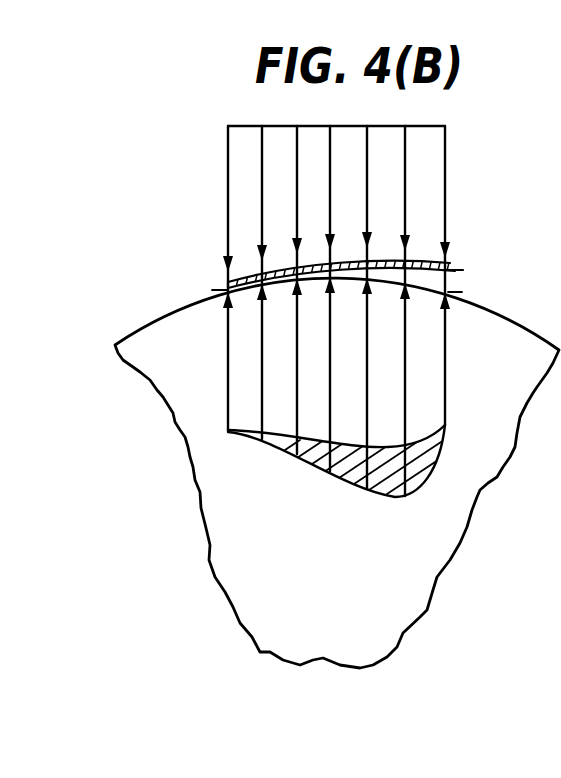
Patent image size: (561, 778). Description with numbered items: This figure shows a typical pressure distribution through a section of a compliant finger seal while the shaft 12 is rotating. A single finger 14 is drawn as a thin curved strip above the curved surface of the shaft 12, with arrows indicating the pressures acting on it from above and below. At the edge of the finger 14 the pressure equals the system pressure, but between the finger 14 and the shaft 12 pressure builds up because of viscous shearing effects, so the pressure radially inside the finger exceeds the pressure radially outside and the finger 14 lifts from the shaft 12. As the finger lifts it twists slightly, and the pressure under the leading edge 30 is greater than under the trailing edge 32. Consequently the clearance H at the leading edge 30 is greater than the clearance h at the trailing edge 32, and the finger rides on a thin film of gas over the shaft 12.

The shaft 12 is at (479, 459).
The finger 14 is at (433, 266).
The leading edge 30 is at (446, 271).
The trailing edge 32 is at (229, 285).
The clearance at the trailing edge h is at (212, 290).
The clearance at the leading edge H is at (460, 282).